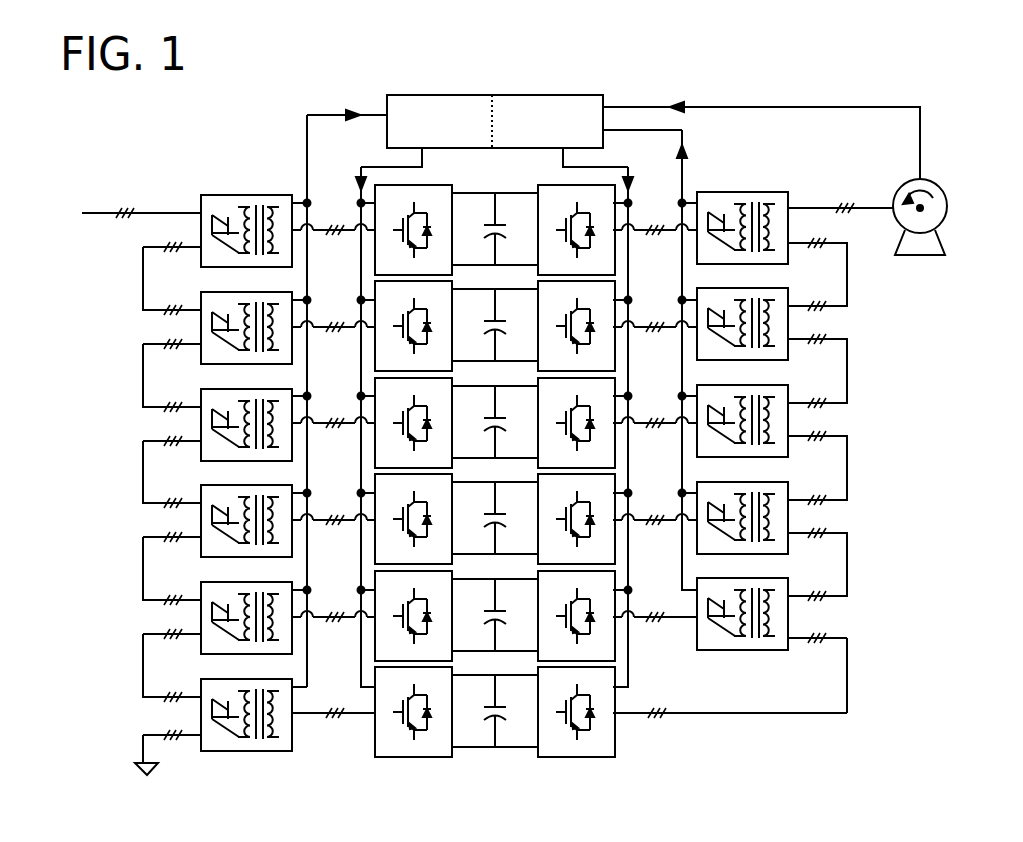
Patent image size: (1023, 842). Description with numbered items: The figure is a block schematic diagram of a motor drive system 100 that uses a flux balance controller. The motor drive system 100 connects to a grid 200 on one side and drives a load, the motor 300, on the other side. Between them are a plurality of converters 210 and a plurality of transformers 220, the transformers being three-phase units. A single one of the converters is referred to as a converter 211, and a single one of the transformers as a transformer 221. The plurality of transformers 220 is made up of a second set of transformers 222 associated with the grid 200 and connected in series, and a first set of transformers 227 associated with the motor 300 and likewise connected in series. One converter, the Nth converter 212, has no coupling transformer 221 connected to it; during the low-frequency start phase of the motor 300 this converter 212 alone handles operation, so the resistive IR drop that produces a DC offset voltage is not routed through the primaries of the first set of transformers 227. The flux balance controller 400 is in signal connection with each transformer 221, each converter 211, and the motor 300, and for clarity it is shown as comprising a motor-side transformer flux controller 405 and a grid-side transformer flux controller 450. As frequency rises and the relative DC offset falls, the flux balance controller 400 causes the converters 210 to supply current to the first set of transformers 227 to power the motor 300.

The motor drive system 100 is at (932, 762).
The grid 200 is at (95, 213).
The plurality of converters 210 is at (402, 794).
The converter 211 is at (518, 748).
The Nth converter 212 is at (477, 748).
The plurality of transformers 220 is at (229, 803).
The transformer 221 is at (232, 751).
The second set of transformers 222 is at (293, 188).
The first set of transformers 227 is at (785, 183).
The motor 300 is at (940, 185).
The flux balance controller 400 is at (487, 51).
The motor-side transformer flux controller 405 is at (540, 95).
The grid-side transformer flux controller 450 is at (427, 95).